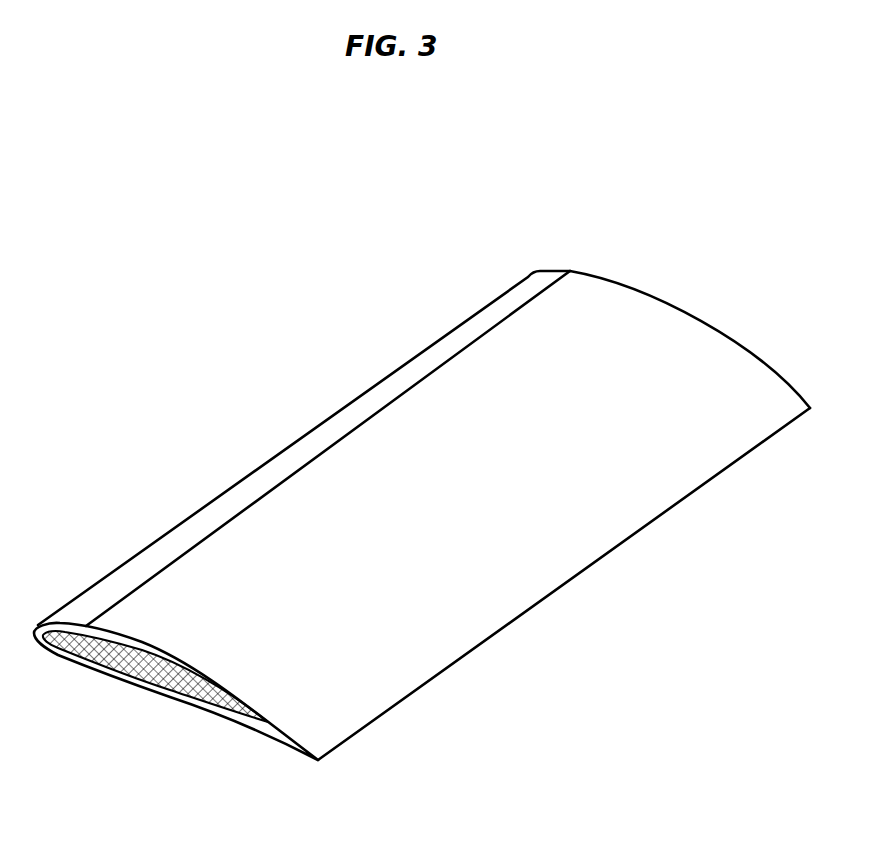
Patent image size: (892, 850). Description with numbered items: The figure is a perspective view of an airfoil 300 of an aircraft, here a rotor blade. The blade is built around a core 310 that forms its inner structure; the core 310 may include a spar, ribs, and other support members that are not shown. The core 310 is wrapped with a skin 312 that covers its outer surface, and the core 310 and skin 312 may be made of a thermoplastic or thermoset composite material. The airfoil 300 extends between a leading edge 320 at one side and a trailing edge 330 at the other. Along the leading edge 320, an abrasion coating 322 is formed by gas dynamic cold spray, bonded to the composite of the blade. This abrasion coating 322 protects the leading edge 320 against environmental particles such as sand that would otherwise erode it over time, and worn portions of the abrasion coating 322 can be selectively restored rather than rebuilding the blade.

The airfoil 300 is at (435, 484).
The core 310 is at (168, 677).
The skin 312 is at (755, 392).
The leading edge 320 is at (304, 448).
The abrasion coating 322 is at (408, 372).
The trailing edge 330 is at (635, 543).